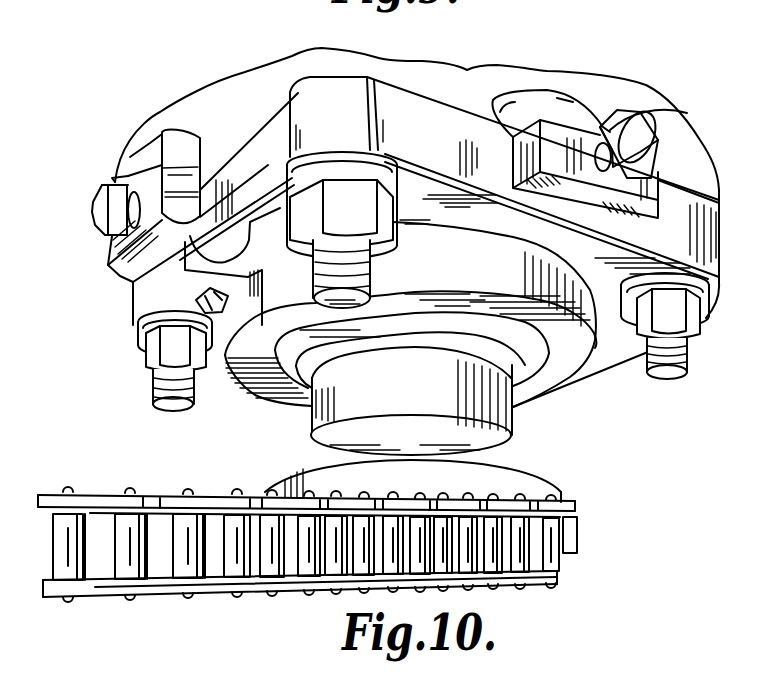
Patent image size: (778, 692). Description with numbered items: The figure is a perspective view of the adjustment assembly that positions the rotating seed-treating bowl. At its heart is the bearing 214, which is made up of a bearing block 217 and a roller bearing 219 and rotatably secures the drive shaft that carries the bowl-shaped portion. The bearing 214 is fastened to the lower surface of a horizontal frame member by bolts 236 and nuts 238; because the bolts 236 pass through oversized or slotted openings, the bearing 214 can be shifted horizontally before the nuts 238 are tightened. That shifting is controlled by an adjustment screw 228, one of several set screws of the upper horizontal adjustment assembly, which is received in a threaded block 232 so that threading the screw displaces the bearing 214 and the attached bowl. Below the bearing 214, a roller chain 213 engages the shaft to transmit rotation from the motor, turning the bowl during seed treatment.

The roller chain 213 is at (206, 498).
The bearing 214 is at (350, 116).
The bearing block 217 is at (425, 123).
The roller bearing 219 is at (515, 327).
The adjustment screw 228 is at (613, 133).
The threaded block 232 is at (660, 181).
The bolt 236 is at (292, 202).
The nut 238 is at (313, 266).